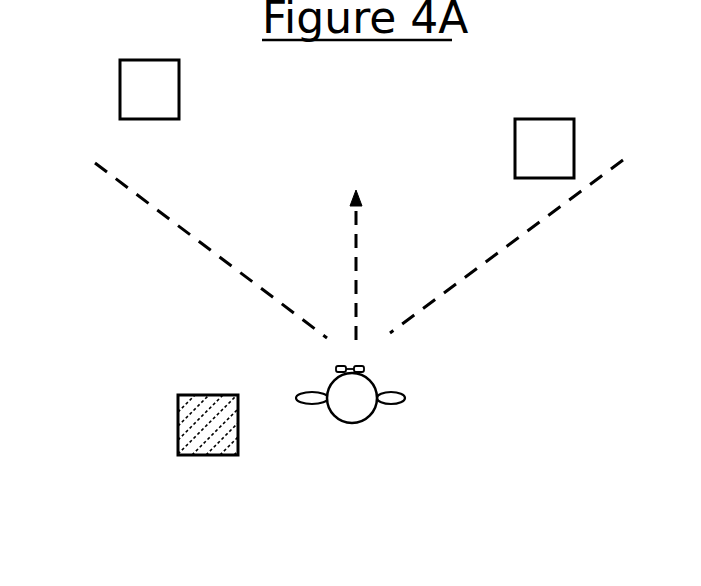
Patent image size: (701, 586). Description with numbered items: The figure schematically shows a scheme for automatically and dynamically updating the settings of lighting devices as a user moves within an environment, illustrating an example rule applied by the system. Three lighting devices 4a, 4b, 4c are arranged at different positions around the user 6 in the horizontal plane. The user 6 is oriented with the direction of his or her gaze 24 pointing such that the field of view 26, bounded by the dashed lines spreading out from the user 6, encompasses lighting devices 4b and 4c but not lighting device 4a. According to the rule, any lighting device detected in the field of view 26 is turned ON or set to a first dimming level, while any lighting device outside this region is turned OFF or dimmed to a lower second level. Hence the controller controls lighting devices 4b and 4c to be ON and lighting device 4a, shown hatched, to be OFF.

The lighting device 4a is at (178, 430).
The lighting device 4b is at (120, 82).
The lighting device 4c is at (532, 119).
The user 6 is at (367, 420).
The direction of gaze 24 is at (356, 262).
The field of view 26 is at (493, 255).